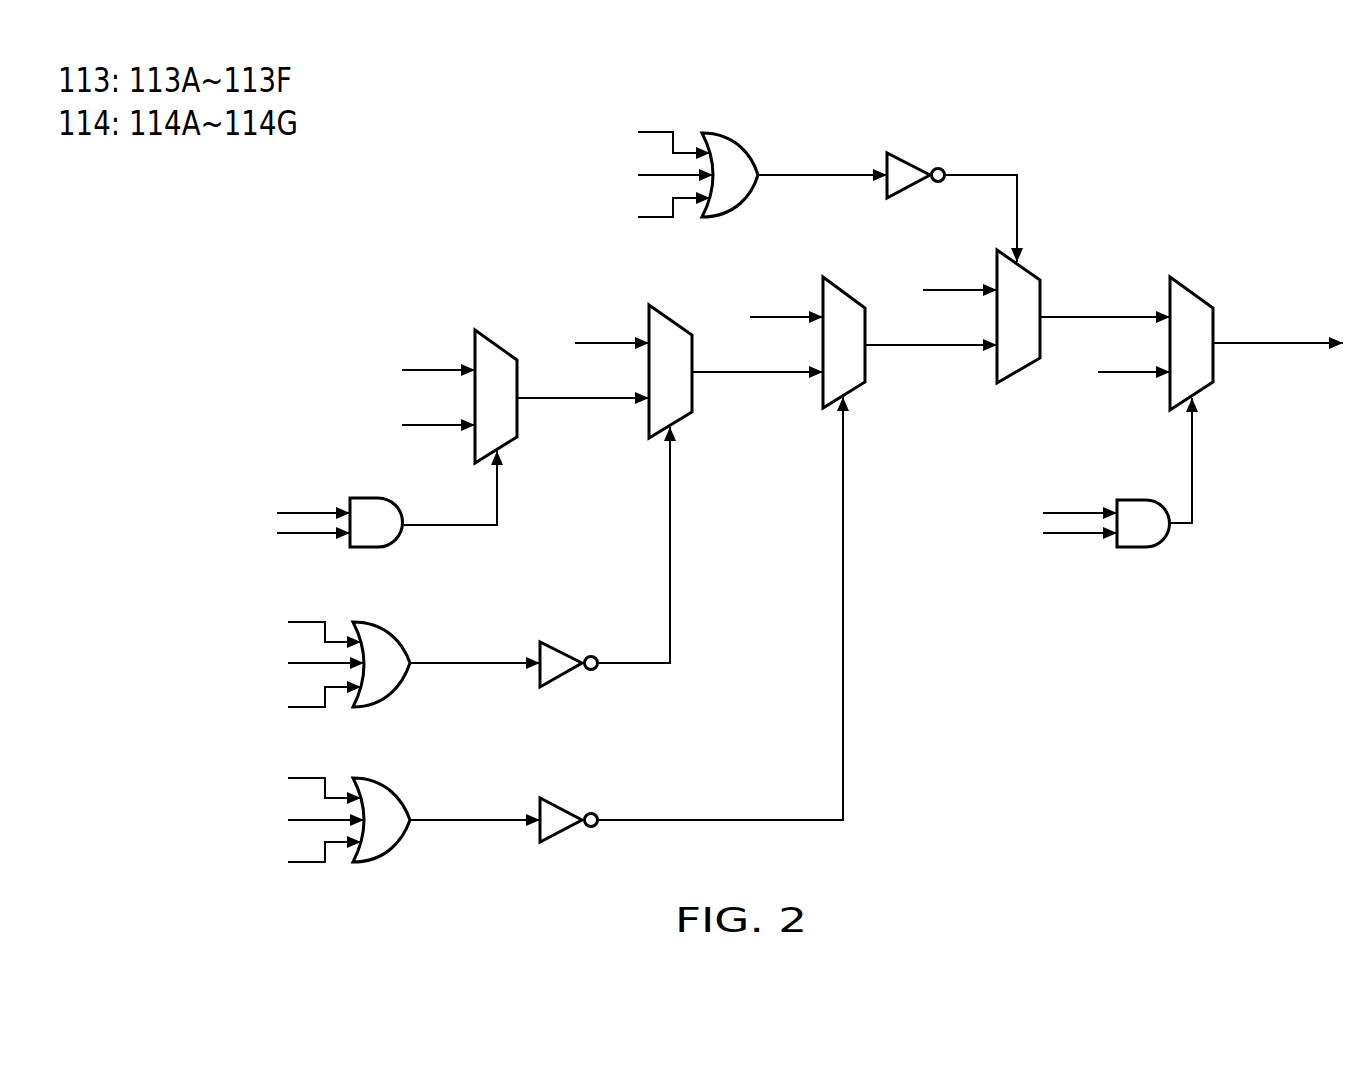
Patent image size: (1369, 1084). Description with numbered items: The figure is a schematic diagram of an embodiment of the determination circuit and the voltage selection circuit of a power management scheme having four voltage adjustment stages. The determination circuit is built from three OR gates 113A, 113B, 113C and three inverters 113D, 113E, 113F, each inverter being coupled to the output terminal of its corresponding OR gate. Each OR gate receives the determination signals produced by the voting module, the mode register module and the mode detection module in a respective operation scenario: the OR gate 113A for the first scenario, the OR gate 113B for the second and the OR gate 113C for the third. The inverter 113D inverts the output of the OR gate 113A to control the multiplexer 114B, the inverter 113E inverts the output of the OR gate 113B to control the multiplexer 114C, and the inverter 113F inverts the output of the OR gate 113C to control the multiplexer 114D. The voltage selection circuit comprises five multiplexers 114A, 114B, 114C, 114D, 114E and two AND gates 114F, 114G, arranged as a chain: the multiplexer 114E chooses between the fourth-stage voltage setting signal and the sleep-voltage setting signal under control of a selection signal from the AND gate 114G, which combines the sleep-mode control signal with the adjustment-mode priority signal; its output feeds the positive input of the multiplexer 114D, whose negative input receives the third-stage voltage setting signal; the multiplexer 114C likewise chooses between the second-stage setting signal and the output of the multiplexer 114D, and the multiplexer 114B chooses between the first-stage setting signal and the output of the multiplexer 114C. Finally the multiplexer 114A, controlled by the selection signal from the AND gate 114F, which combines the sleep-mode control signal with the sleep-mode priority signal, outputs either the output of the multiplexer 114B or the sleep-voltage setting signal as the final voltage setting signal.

The OR gate 113A is at (728, 145).
The OR gate 113B is at (379, 791).
The OR gate 113C is at (379, 636).
The inverter 113D is at (906, 162).
The inverter 113E is at (563, 809).
The inverter 113F is at (563, 653).
The multiplexer 114A is at (1192, 292).
The multiplexer 114B is at (1017, 372).
The multiplexer 114C is at (845, 292).
The multiplexer 114D is at (671, 320).
The multiplexer 114E is at (499, 345).
The AND gate 114F is at (1137, 500).
The AND gate 114G is at (370, 498).